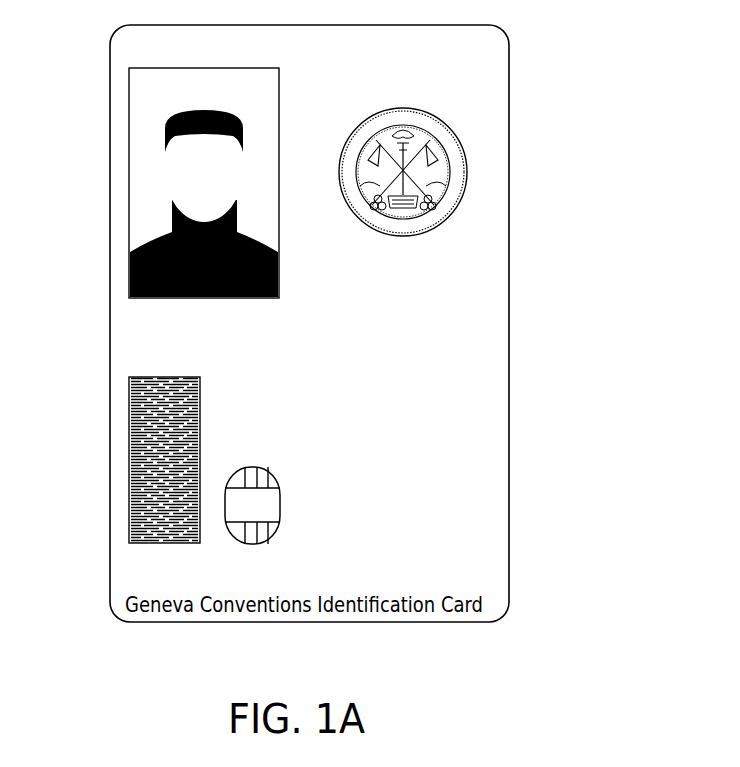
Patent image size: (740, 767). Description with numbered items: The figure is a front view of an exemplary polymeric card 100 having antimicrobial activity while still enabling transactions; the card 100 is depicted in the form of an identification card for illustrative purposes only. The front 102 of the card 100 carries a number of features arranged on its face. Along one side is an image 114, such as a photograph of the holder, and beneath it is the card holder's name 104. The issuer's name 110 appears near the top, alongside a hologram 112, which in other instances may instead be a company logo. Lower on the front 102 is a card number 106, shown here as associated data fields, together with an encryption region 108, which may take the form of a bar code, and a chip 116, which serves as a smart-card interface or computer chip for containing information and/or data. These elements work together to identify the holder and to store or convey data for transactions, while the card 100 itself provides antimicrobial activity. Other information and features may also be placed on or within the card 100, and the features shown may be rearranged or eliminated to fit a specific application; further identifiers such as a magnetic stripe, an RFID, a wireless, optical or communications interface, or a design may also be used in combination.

The card 100 is at (645, 99).
The front of the card 102 is at (509, 358).
The card holder's name 104 is at (121, 323).
The card number 106 is at (490, 521).
The encryption region 108 is at (128, 459).
The issuer's name 110 is at (492, 58).
The hologram 112 is at (462, 165).
The image 114 is at (128, 181).
The chip 116 is at (250, 515).